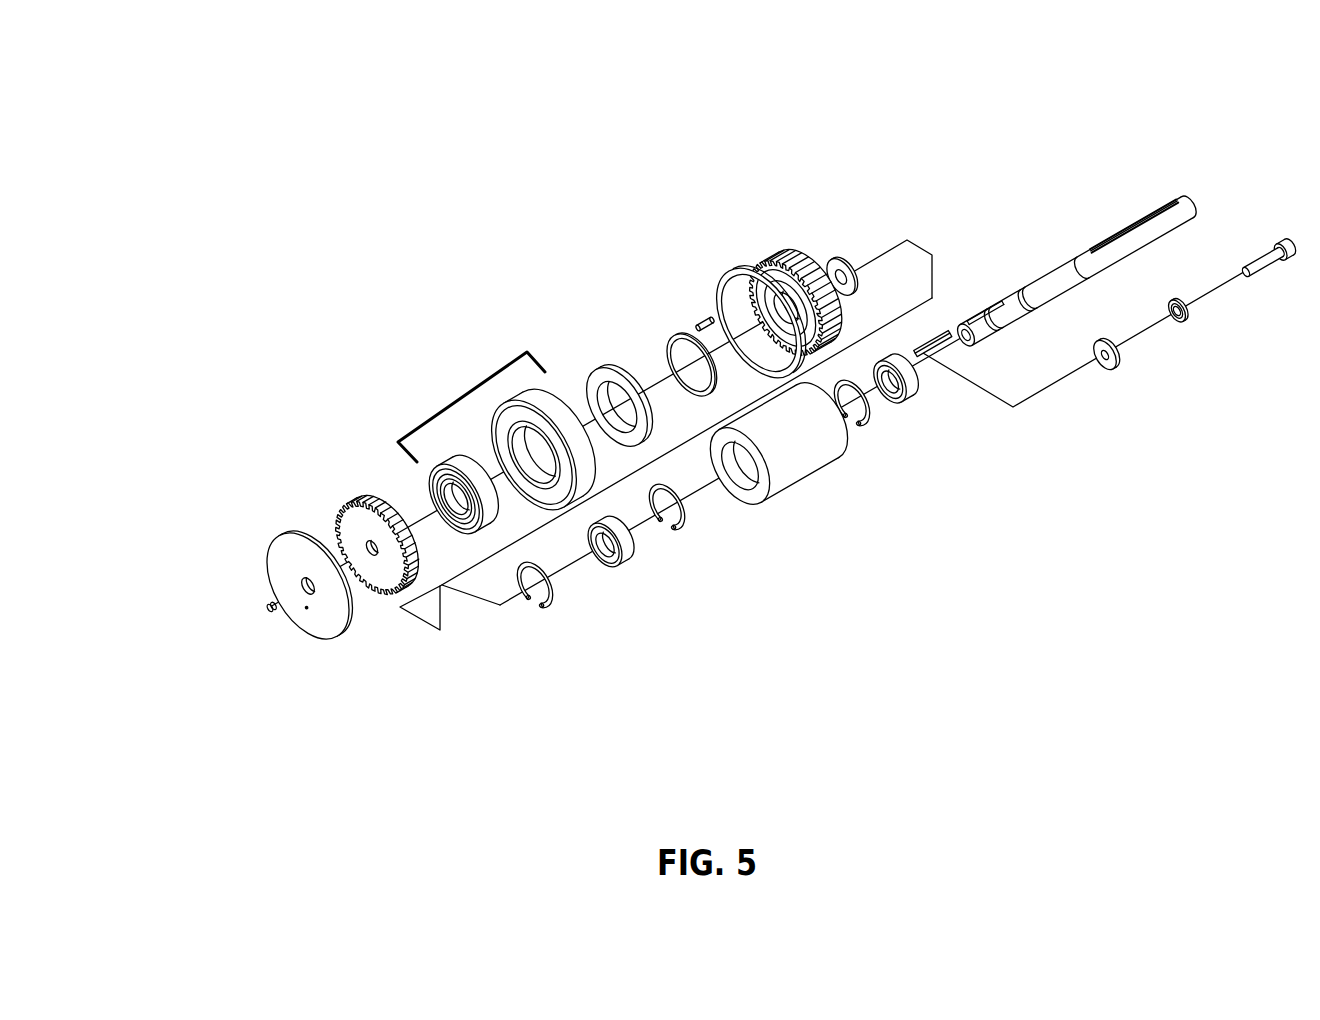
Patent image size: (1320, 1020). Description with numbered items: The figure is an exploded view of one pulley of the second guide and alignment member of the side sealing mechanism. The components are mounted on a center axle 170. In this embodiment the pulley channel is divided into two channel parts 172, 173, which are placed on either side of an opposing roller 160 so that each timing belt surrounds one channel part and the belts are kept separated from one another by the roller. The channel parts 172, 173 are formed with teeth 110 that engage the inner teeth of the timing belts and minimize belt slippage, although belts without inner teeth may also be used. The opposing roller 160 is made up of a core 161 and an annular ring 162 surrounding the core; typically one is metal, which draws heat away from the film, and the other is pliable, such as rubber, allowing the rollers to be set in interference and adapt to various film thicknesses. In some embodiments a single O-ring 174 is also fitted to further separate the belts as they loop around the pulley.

The teeth 110 is at (388, 598).
The opposing roller 160 is at (415, 421).
The core 161 is at (440, 463).
The annular ring 162 is at (497, 402).
The center axle 170 is at (1097, 250).
The channel part 172 is at (274, 574).
The channel part 173 is at (780, 252).
The O-ring 174 is at (745, 272).